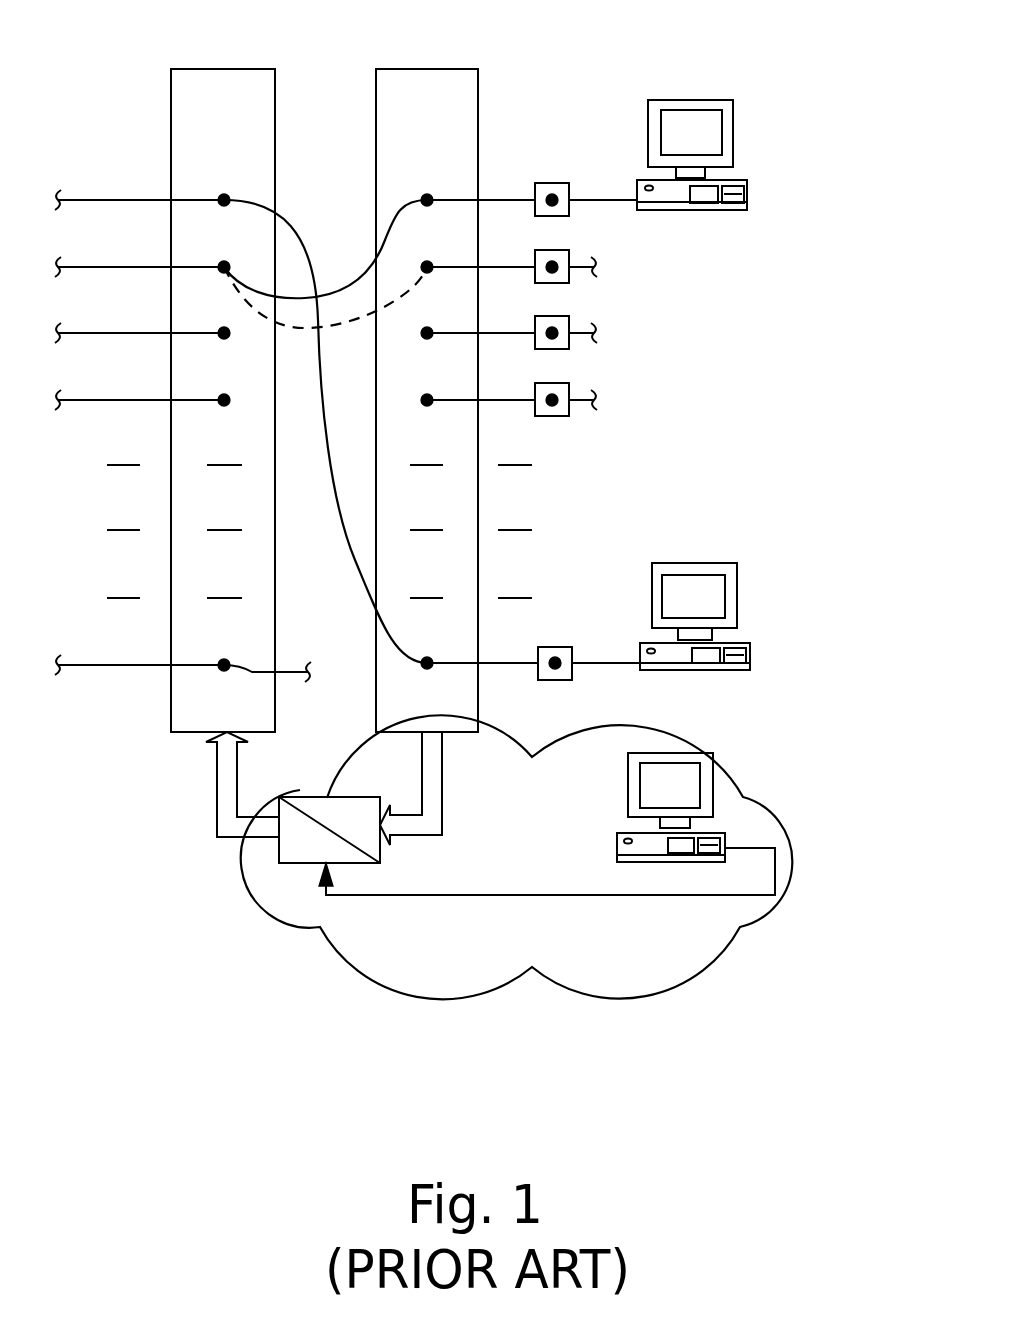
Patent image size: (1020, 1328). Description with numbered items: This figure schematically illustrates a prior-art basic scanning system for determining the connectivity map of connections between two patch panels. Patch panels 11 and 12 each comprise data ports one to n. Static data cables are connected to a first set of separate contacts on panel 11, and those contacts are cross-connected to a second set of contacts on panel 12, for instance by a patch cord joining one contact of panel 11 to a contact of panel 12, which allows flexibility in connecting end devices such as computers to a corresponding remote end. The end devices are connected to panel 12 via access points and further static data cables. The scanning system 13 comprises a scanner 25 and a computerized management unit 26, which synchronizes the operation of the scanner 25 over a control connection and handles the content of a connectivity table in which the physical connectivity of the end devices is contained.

The patch panel 11 is at (203, 68).
The patch panel 12 is at (400, 68).
The scanner 25 is at (312, 797).
The computerized management unit 26 is at (690, 777).
The scanning system 13 is at (636, 1008).